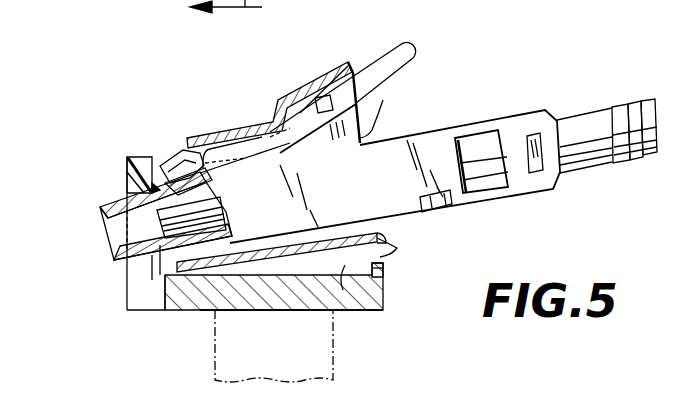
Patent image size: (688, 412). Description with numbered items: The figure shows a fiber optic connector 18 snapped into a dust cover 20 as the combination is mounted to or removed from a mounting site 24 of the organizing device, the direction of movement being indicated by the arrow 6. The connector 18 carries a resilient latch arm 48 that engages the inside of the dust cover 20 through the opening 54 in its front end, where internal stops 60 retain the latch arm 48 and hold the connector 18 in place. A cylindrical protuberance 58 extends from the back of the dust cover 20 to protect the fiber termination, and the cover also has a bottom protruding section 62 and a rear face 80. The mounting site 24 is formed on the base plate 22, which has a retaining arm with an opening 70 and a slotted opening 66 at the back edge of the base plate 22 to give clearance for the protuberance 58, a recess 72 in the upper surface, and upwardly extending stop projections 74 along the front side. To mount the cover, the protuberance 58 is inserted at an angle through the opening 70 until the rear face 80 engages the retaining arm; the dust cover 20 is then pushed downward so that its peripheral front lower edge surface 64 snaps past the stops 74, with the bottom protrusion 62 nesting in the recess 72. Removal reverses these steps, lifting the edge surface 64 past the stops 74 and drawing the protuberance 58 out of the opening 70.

The insertion direction arrow 6 is at (237, 10).
The fiber optic connector 18 is at (502, 115).
The dust cover 20 is at (305, 84).
The base plate 22 is at (385, 302).
The mounting site 24 is at (364, 310).
The latch arm 48 is at (405, 43).
The opening 54 is at (363, 140).
The cylindrical protuberance 58 is at (112, 252).
The internal stops 60 is at (333, 78).
The bottom protruding section 62 is at (366, 252).
The peripheral front lower edge surface 64 is at (378, 238).
The slotted opening 66 is at (127, 292).
The opening 70 is at (127, 197).
The recess 72 is at (300, 282).
The stop projection 74 is at (387, 268).
The rear face 80 is at (187, 168).